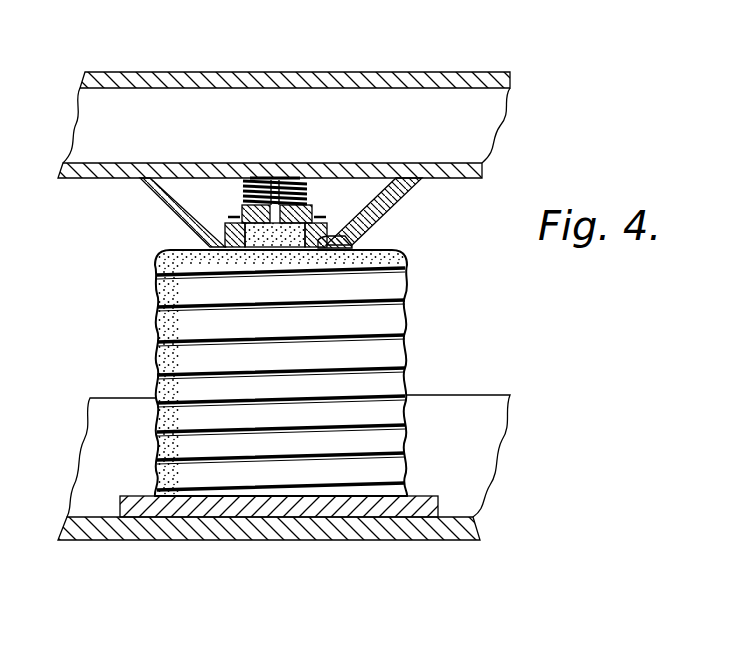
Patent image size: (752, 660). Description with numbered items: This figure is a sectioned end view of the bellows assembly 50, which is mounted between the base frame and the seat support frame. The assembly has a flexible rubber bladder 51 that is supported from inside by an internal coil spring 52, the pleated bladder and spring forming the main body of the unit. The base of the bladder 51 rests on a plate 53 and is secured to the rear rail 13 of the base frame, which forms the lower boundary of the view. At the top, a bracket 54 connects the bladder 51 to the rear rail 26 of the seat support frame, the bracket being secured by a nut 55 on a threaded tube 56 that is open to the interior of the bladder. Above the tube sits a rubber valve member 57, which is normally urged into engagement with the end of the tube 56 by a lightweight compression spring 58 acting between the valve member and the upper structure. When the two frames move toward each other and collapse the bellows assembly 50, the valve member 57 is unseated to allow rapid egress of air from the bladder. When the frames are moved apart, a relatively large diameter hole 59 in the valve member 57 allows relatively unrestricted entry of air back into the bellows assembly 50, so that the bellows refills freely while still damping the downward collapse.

The rear rail of the seat support frame 26 is at (476, 80).
The rear rail of the base frame 13 is at (445, 525).
The bellows assembly 50 is at (452, 323).
The flexible rubber bladder 51 is at (407, 283).
The internal coil spring 52 is at (407, 345).
The mounting plate 53 is at (423, 496).
The bracket 54 is at (410, 190).
The nut 55 is at (372, 234).
The threaded tube 56 is at (238, 250).
The rubber valve member 57 is at (316, 212).
The lightweight compression spring 58 is at (308, 178).
The hole 59 is at (253, 178).